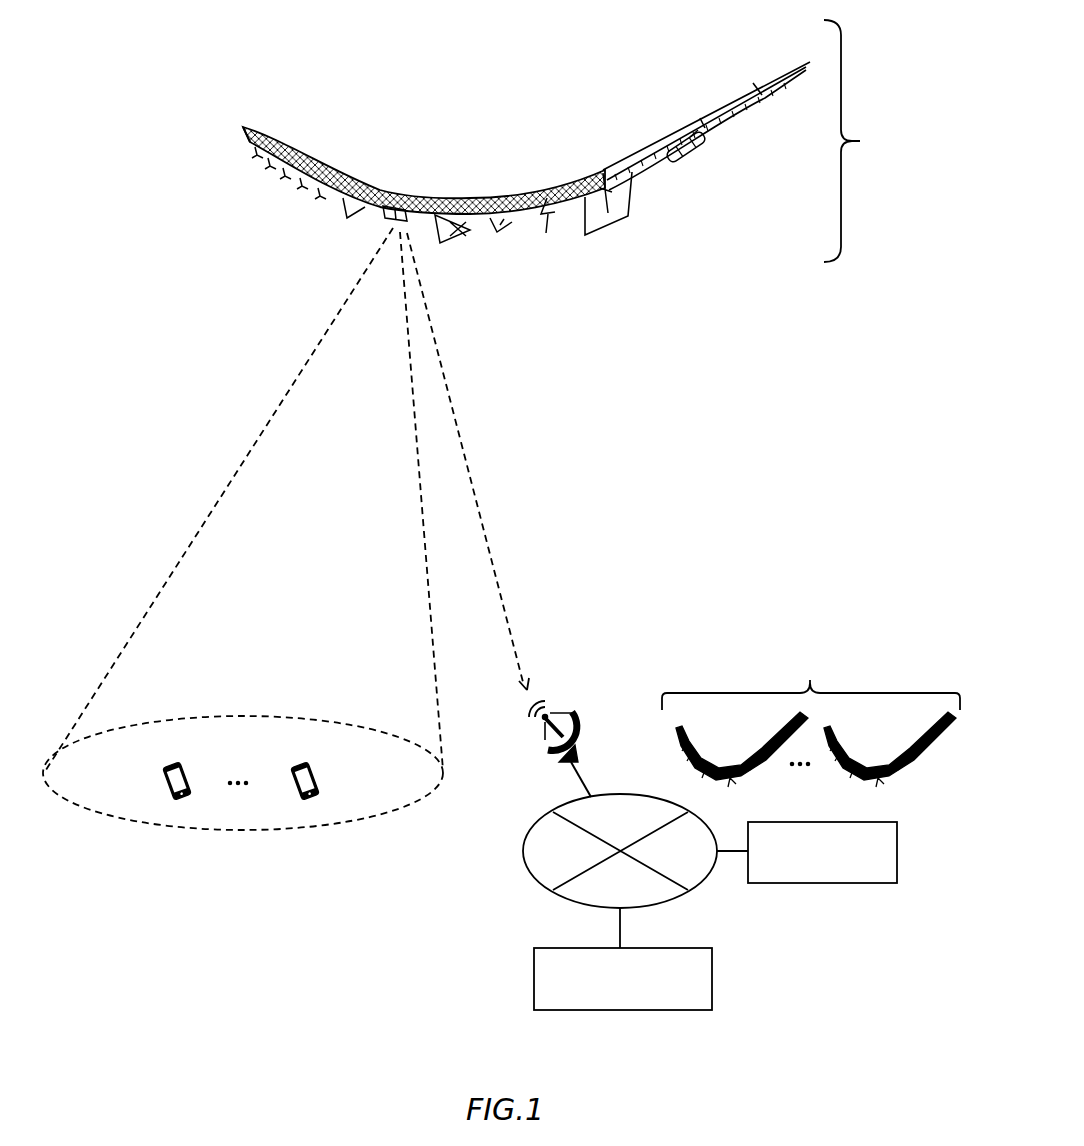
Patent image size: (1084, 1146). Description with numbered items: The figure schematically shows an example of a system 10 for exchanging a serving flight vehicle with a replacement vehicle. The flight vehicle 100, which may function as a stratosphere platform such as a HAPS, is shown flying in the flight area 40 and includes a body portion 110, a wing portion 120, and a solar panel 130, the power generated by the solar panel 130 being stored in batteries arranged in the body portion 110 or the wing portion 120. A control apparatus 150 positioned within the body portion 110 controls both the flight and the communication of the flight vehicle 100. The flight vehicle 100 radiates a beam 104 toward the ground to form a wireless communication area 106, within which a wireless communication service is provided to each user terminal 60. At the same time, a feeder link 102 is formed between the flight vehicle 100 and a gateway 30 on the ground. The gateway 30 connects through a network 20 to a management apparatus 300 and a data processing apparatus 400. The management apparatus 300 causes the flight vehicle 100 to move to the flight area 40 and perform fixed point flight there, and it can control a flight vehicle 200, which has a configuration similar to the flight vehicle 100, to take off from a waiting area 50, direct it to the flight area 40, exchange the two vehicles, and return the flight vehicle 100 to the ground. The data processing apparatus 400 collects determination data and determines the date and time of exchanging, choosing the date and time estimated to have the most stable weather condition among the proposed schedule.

The system 10 is at (144, 36).
The flight vehicle 100 is at (278, 75).
The body portion 110 is at (380, 208).
The wing portion 120 is at (263, 126).
The solar panel 130 is at (293, 147).
The control apparatus 150 is at (407, 190).
The feeder link 102 is at (477, 500).
The beam 104 is at (246, 455).
The wireless communication area 106 is at (351, 718).
The user terminal 60 is at (312, 766).
The gateway 30 is at (582, 723).
The flight area 40 is at (858, 141).
The waiting area 50 is at (811, 720).
The flight vehicle 200 is at (830, 753).
The network 20 is at (522, 851).
The management apparatus 300 is at (898, 853).
The data processing apparatus 400 is at (713, 985).